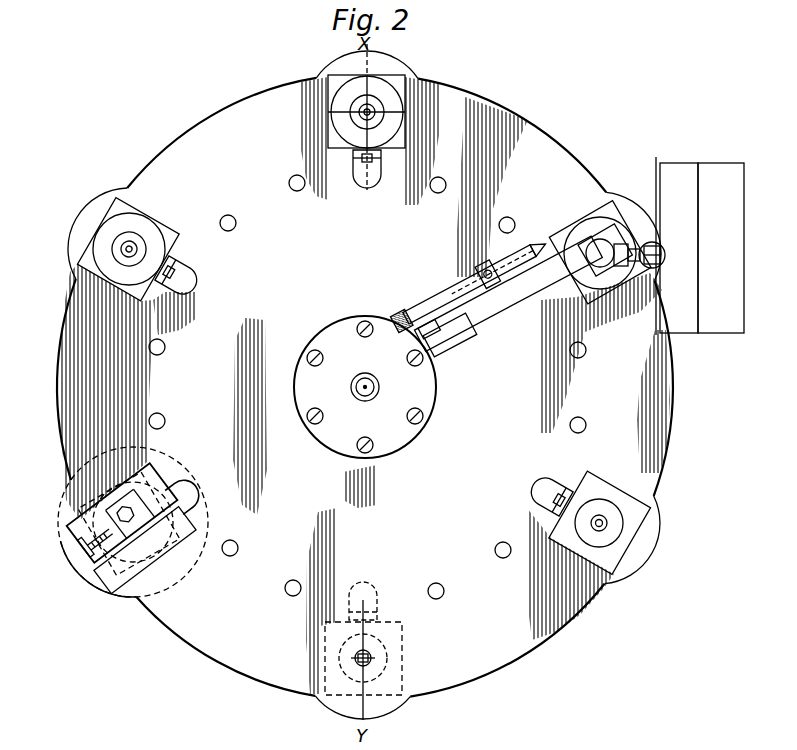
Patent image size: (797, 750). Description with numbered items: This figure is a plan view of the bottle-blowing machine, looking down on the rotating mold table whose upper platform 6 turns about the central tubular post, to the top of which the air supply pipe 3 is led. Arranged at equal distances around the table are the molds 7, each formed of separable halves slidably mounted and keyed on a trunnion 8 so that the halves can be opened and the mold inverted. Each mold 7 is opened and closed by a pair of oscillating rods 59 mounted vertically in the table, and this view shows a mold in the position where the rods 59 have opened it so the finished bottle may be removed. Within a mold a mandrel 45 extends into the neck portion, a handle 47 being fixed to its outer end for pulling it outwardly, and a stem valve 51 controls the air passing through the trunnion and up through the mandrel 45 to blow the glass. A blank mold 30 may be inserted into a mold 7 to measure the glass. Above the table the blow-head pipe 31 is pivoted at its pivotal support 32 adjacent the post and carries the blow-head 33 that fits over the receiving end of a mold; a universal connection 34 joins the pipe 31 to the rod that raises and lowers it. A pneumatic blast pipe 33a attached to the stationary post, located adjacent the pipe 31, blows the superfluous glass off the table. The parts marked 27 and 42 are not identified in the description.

The supply pipe 3 is at (379, 387).
The upper platform 6 is at (365, 387).
The mold 7 is at (388, 82).
The trunnion 8 is at (150, 527).
The support bracket 27 is at (677, 180).
The blank mold 30 is at (394, 112).
The pipe 31 is at (497, 312).
The pivotal support 32 is at (462, 352).
The blow-head 33 is at (600, 250).
The pneumatic blast pipe 33a is at (545, 240).
The universal connection 34 is at (655, 258).
The screw 42 is at (84, 541).
The mandrel 45 is at (350, 112).
The handle 47 is at (438, 655).
The stem valve 51 is at (120, 540).
The oscillating rod 59 is at (499, 225).